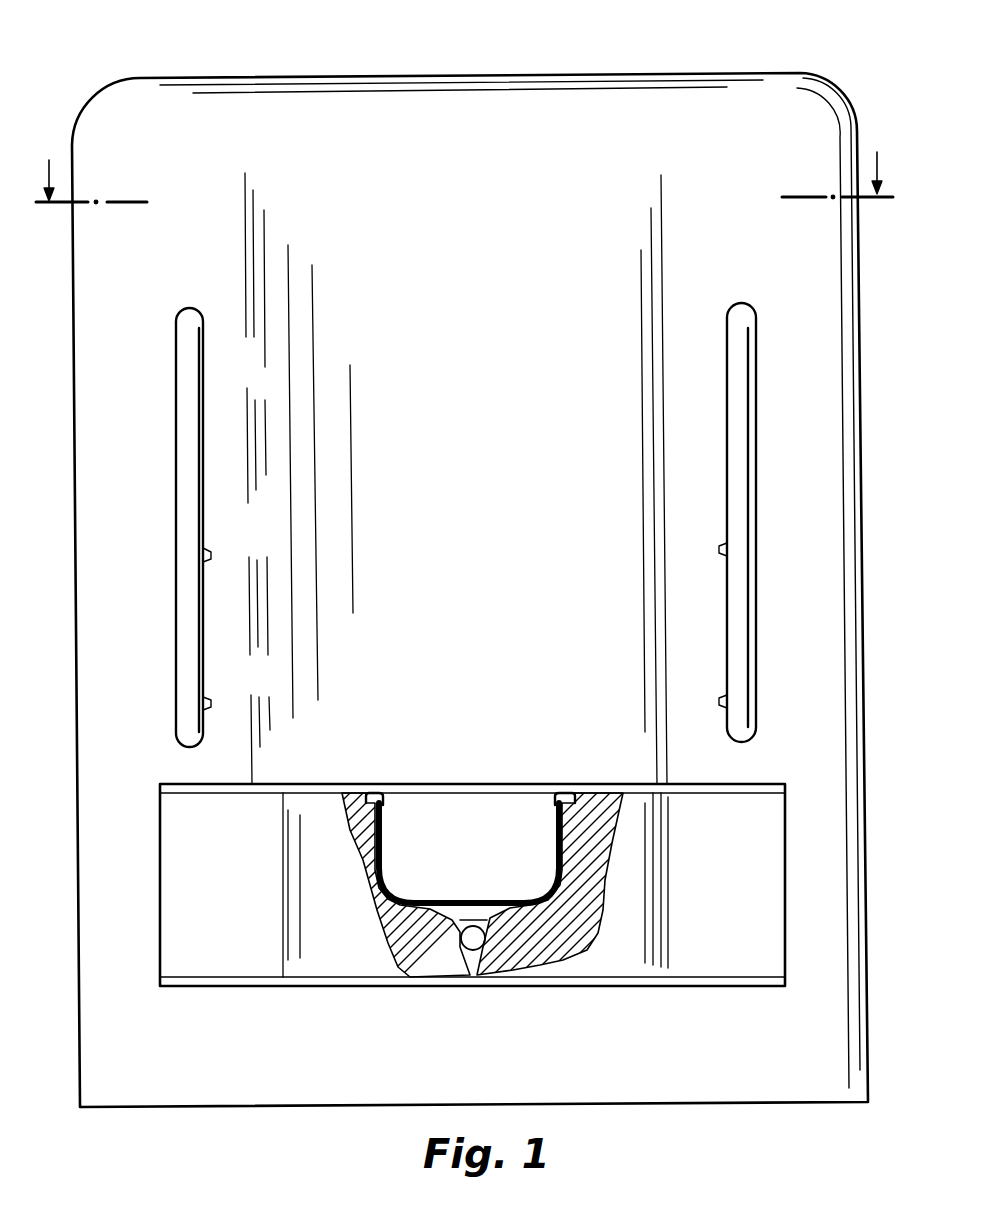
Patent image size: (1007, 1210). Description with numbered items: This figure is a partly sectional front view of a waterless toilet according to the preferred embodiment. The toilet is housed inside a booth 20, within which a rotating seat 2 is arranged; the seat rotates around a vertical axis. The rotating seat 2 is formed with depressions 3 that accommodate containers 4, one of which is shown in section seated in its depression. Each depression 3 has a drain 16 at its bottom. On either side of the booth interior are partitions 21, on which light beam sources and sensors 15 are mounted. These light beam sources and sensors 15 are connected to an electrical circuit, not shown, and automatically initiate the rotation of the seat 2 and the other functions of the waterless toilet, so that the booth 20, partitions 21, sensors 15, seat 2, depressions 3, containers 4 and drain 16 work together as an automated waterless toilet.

The booth 20 is at (673, 73).
The partitions 21 is at (193, 392).
The light beam sources and sensors 15 is at (212, 555).
The rotating seat 2 is at (234, 912).
The depressions 3 is at (563, 893).
The containers 4 is at (445, 900).
The drain 16 is at (474, 951).